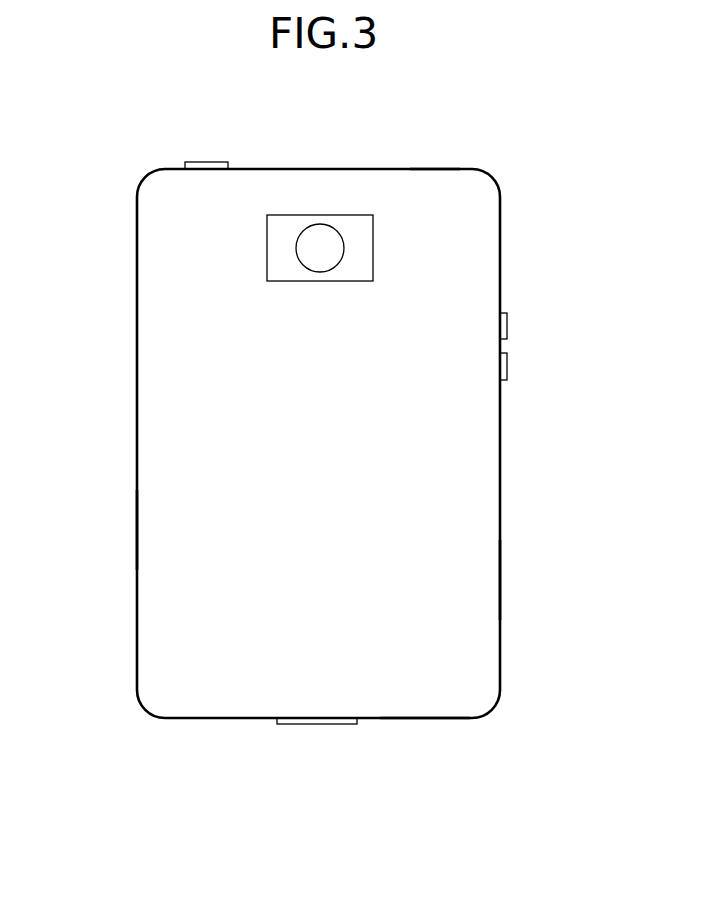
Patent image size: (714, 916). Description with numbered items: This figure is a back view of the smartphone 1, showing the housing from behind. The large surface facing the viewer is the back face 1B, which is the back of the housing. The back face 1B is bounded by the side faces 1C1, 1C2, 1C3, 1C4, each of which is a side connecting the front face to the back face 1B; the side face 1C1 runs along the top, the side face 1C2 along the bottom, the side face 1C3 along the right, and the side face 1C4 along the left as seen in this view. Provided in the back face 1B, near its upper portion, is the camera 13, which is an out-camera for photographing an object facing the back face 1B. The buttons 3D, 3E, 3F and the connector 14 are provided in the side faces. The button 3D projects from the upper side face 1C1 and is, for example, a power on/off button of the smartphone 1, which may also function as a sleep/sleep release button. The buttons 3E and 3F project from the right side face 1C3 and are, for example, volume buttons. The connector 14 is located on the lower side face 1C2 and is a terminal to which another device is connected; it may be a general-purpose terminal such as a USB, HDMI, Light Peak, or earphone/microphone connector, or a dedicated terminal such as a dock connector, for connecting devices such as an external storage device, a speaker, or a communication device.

The smartphone 1 is at (516, 141).
The back face 1B is at (166, 405).
The side face 1C1 is at (410, 169).
The side face 1C2 is at (424, 718).
The side face 1C3 is at (500, 577).
The side face 1C4 is at (137, 525).
The button 3D is at (213, 162).
The button 3E is at (507, 327).
The button 3F is at (507, 367).
The camera 13 is at (320, 248).
The connector 14 is at (310, 724).